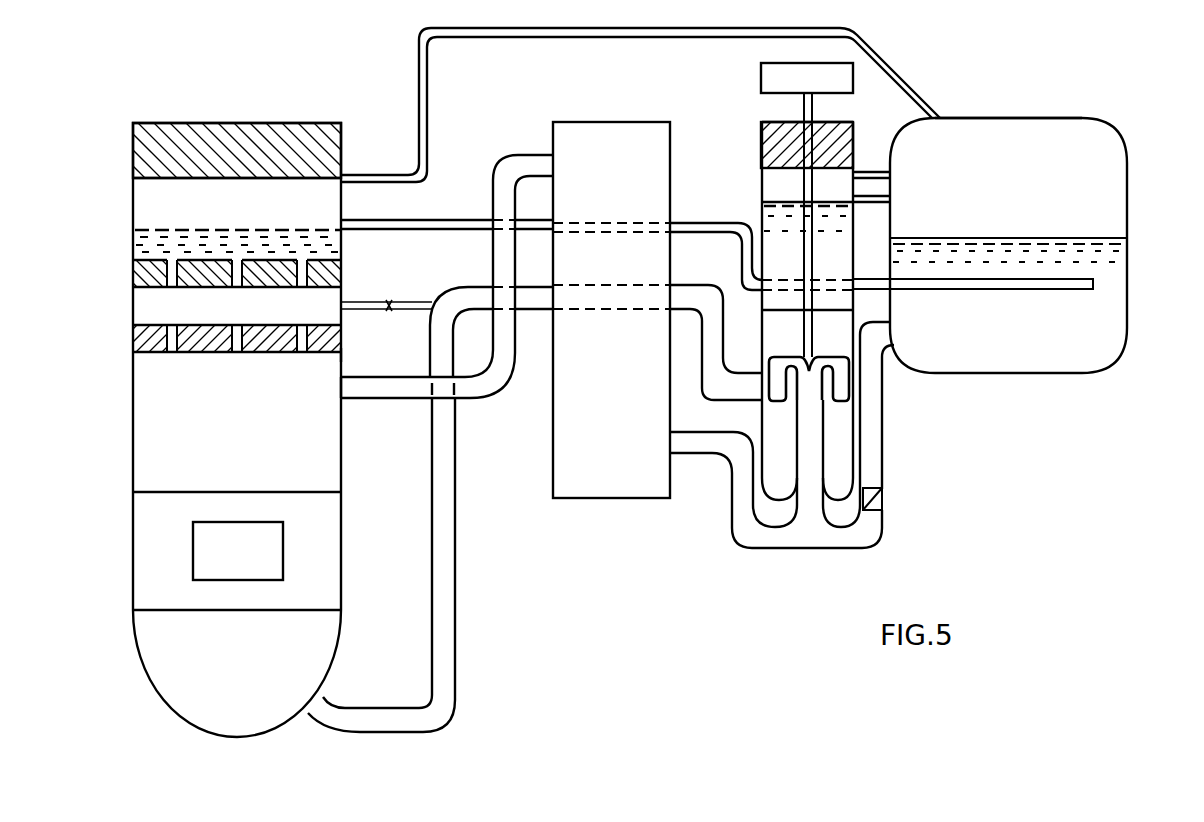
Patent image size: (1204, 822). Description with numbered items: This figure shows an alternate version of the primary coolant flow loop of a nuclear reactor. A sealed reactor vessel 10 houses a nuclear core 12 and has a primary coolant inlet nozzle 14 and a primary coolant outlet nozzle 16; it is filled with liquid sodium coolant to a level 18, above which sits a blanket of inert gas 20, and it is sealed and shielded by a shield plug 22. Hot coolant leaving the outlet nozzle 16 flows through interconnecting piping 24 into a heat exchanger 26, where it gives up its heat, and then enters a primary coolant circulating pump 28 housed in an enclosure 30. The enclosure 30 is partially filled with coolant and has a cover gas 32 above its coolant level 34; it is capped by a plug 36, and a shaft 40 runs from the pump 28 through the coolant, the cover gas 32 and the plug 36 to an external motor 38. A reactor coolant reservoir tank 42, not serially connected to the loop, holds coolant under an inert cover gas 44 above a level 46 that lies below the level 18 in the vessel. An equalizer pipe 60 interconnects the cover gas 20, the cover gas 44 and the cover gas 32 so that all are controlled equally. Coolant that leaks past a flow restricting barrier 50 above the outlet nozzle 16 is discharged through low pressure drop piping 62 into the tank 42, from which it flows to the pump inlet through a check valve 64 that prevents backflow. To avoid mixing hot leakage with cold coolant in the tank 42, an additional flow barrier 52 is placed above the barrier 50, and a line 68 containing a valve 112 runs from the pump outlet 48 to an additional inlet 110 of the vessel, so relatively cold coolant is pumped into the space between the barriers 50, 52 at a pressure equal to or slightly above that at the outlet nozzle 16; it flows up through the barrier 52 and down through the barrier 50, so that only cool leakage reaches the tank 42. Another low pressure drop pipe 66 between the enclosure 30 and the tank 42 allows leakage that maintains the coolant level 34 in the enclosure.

The reactor vessel 10 is at (342, 468).
The nuclear core 12 is at (282, 549).
The primary coolant inlet nozzle 14 is at (393, 732).
The primary coolant outlet nozzle 16 is at (345, 394).
The level of reactor coolant 18 is at (145, 232).
The blanket of inert gas 20 is at (142, 196).
The shield plug 22 is at (178, 123).
The interconnecting piping 24 is at (408, 398).
The heat exchanger 26 is at (553, 491).
The primary coolant circulating pump 28 is at (810, 378).
The enclosure 30 is at (850, 330).
The cover gas 32 is at (761, 178).
The level of reactor coolant 34 is at (765, 203).
The plug 36 is at (762, 119).
The motor 38 is at (760, 76).
The shaft 40 is at (813, 258).
The reactor coolant reservoir tank 42 is at (1070, 373).
The inert cover gas 44 is at (1057, 118).
The level of reactor coolant 46 is at (1127, 238).
The pump outlet 48 is at (534, 305).
The flow restricting barrier 50 is at (342, 355).
The additional flow barrier 52 is at (170, 352).
The equalizer pipe 60 is at (418, 65).
The low pressure drop piping 62 is at (463, 219).
The check valve 64 is at (884, 498).
The low pressure drop pipe 66 is at (870, 203).
The line 68 is at (437, 298).
The additional inlet 110 is at (343, 305).
The valve 112 is at (389, 300).